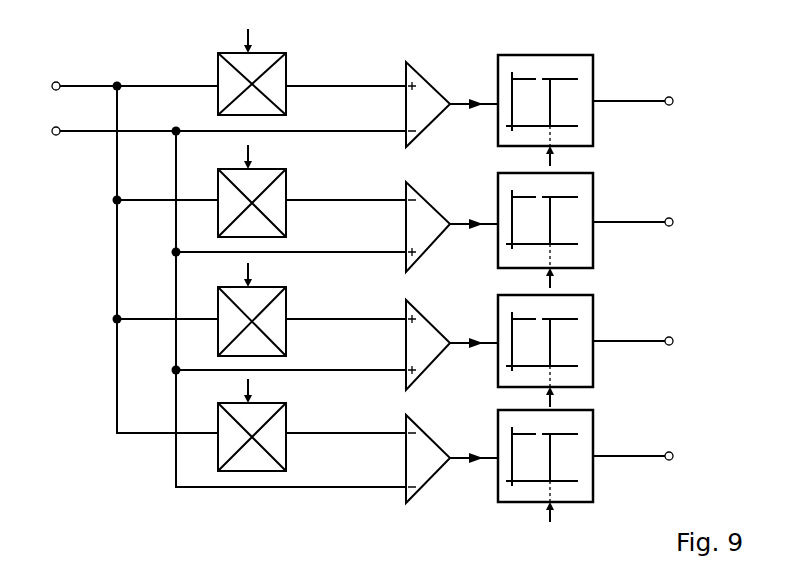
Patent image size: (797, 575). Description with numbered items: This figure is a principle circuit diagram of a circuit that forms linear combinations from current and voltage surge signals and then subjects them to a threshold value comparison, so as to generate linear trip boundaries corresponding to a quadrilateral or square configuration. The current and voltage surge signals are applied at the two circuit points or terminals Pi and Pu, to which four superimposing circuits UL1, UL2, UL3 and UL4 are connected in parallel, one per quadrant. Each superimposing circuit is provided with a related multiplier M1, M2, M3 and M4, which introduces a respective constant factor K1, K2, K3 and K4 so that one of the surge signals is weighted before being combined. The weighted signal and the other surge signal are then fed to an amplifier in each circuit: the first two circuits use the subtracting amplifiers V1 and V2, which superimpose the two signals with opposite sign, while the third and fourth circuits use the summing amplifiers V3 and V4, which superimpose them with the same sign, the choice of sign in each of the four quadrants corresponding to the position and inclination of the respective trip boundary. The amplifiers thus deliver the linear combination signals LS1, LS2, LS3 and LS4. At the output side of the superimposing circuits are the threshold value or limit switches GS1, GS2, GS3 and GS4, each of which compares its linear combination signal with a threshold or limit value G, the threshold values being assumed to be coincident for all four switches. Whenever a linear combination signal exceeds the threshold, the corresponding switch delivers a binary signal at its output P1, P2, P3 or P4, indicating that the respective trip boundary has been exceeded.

The circuit point Pi is at (120, 254).
The circuit point Pu is at (213, 303).
The constant factor K1 is at (261, 38).
The constant factor K2 is at (261, 154).
The constant factor K3 is at (261, 272).
The constant factor K4 is at (261, 388).
The multiplier M1 is at (286, 107).
The multiplier M2 is at (286, 229).
The multiplier M3 is at (286, 348).
The multiplier M4 is at (286, 463).
The superimposing circuit UL1 is at (366, 58).
The superimposing circuit UL2 is at (366, 174).
The superimposing circuit UL3 is at (366, 292).
The superimposing circuit UL4 is at (366, 408).
The subtracting amplifier V1 is at (424, 86).
The subtracting amplifier V2 is at (424, 206).
The summing amplifier V3 is at (424, 324).
The summing amplifier V4 is at (424, 439).
The linear combination signal LS1 is at (476, 109).
The linear combination signal LS2 is at (476, 229).
The linear combination signal LS3 is at (476, 348).
The linear combination signal LS4 is at (476, 463).
The threshold value switch GS1 is at (593, 72).
The threshold value switch GS2 is at (593, 190).
The threshold value switch GS3 is at (593, 312).
The threshold value switch GS4 is at (593, 427).
The output P1 is at (646, 103).
The output P2 is at (646, 224).
The output P3 is at (646, 343).
The output P4 is at (646, 458).
The threshold value G is at (558, 335).